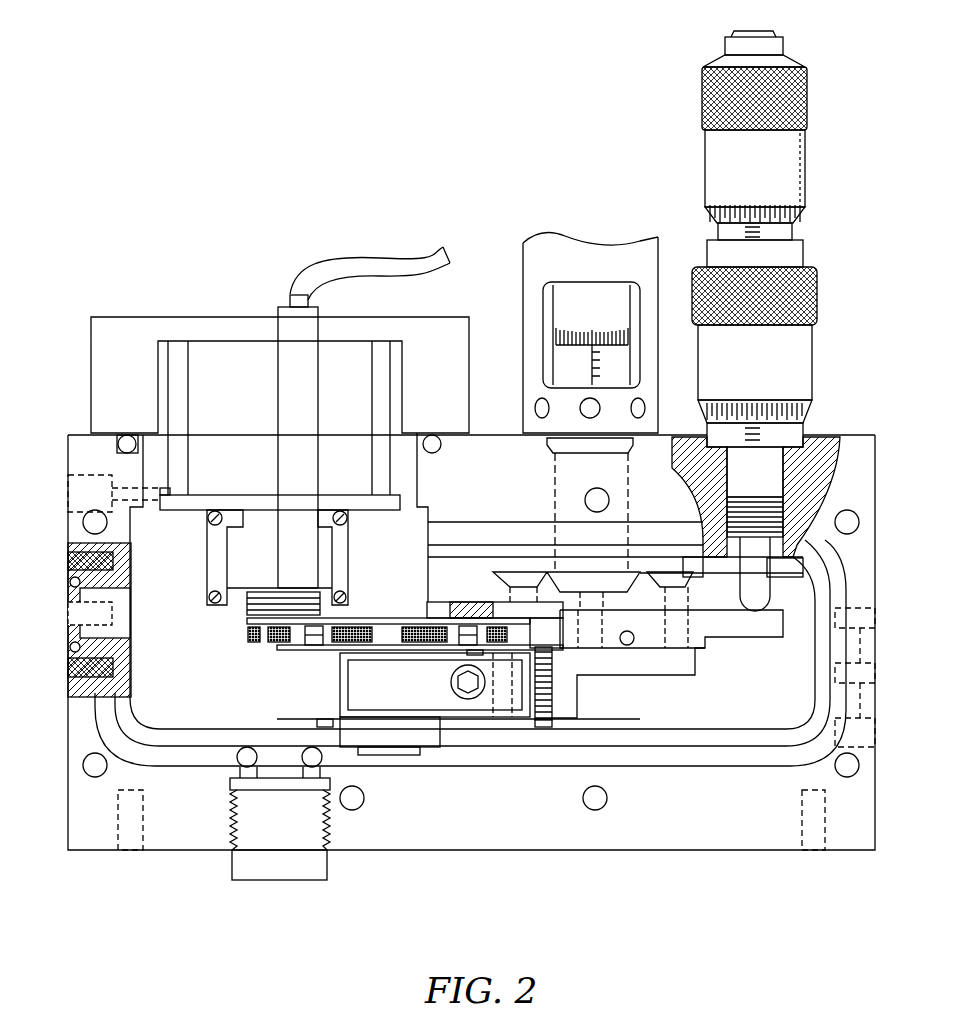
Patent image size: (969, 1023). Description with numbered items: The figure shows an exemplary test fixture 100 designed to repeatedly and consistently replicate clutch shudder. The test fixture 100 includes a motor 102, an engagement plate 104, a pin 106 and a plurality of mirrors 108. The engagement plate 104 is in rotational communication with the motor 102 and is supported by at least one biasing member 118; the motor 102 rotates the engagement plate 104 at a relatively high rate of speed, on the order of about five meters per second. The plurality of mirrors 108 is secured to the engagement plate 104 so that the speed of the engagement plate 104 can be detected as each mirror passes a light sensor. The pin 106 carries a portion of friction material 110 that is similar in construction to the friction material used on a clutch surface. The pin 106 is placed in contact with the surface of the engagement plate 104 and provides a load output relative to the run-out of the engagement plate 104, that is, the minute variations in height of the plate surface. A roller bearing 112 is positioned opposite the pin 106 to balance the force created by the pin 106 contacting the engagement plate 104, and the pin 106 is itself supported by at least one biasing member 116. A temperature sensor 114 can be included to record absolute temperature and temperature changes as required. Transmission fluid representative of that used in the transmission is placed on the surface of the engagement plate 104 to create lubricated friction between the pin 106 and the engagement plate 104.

The test fixture 100 is at (840, 407).
The motor 102 is at (408, 697).
The engagement plate 104 is at (247, 621).
The pin 106 is at (241, 613).
The plurality of mirrors 108 is at (423, 633).
The friction material 110 is at (277, 622).
The roller bearing 112 is at (468, 602).
The temperature sensor 114 is at (313, 380).
The biasing member 116 is at (345, 578).
The biasing member 118 is at (517, 652).